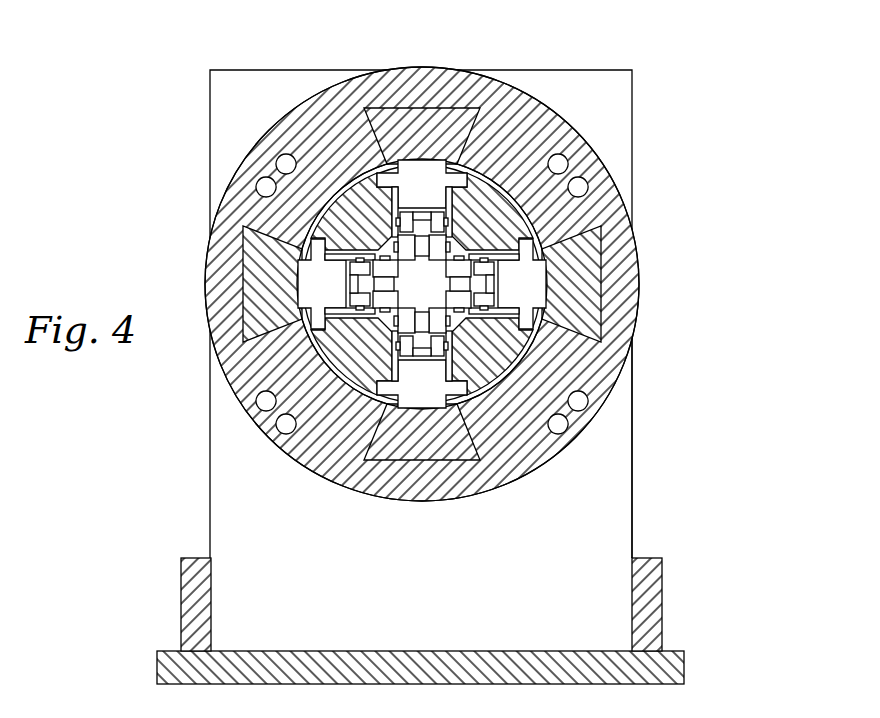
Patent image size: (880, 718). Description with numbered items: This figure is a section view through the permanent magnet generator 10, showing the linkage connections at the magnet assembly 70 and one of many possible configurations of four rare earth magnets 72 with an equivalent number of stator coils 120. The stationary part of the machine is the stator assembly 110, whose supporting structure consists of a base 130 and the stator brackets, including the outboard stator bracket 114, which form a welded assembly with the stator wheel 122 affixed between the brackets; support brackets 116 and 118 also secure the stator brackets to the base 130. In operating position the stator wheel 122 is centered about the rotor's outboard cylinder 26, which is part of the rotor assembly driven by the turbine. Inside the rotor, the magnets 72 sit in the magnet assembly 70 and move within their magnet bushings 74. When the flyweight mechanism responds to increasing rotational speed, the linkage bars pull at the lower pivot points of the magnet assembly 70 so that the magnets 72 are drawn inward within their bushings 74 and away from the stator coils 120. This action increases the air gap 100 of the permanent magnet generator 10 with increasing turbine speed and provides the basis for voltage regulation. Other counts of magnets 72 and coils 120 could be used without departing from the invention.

The permanent magnet generator 10 is at (761, 186).
The outboard cylinder 26 is at (608, 170).
The magnet assembly 70 is at (316, 226).
The rare earth magnets 72 is at (437, 168).
The magnet bushings 74 is at (478, 166).
The air gap 100 is at (320, 268).
The stator assembly 110 is at (206, 93).
The outboard stator bracket 114 is at (633, 468).
The support bracket 116 is at (194, 558).
The support bracket 118 is at (652, 593).
The stator coils 120 is at (412, 128).
The stator wheel 122 is at (322, 115).
The base 130 is at (172, 654).